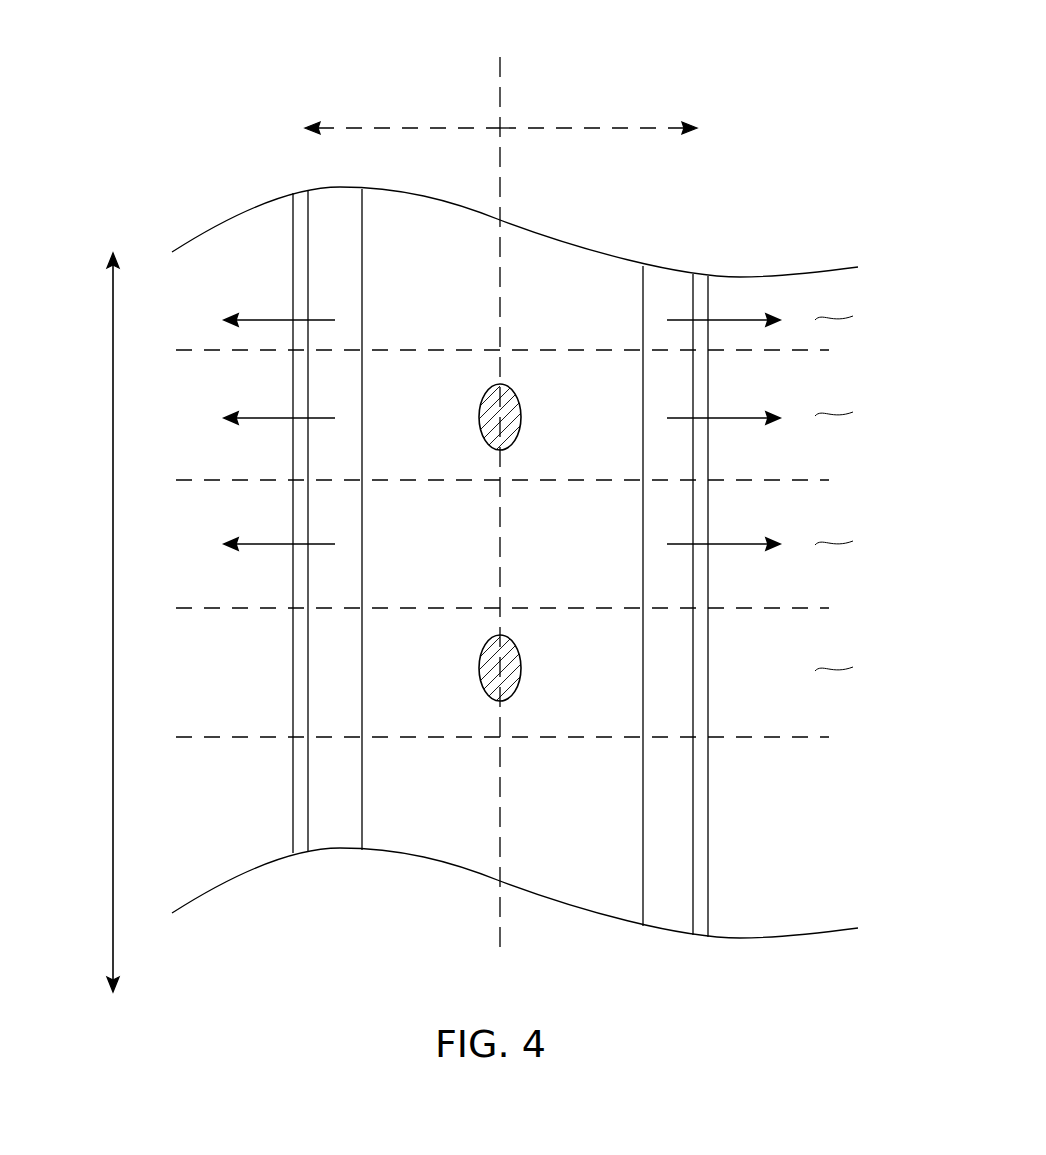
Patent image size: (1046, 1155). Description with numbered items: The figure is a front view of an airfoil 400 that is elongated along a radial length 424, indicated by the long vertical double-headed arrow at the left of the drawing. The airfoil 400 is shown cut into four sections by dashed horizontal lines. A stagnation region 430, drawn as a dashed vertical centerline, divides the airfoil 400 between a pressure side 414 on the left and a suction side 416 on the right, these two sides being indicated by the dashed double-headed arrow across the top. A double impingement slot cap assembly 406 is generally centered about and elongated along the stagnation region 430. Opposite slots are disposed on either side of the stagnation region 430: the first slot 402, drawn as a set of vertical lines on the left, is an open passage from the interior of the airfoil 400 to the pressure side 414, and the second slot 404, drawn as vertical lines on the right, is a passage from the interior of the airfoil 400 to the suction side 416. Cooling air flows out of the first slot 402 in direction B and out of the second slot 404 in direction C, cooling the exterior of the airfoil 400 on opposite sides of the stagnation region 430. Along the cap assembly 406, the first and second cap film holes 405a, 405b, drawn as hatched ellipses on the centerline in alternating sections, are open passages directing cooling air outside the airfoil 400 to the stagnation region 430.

The airfoil 400 is at (461, 503).
The first slot 402 is at (332, 203).
The second slot 404 is at (672, 268).
The first cap film hole 405a is at (523, 415).
The second cap film hole 405b is at (523, 665).
The double impingement slot cap assembly 406 is at (584, 250).
The pressure side 414 is at (366, 129).
The suction side 416 is at (625, 129).
The radial length 424 is at (110, 578).
The stagnation region 430 is at (504, 172).